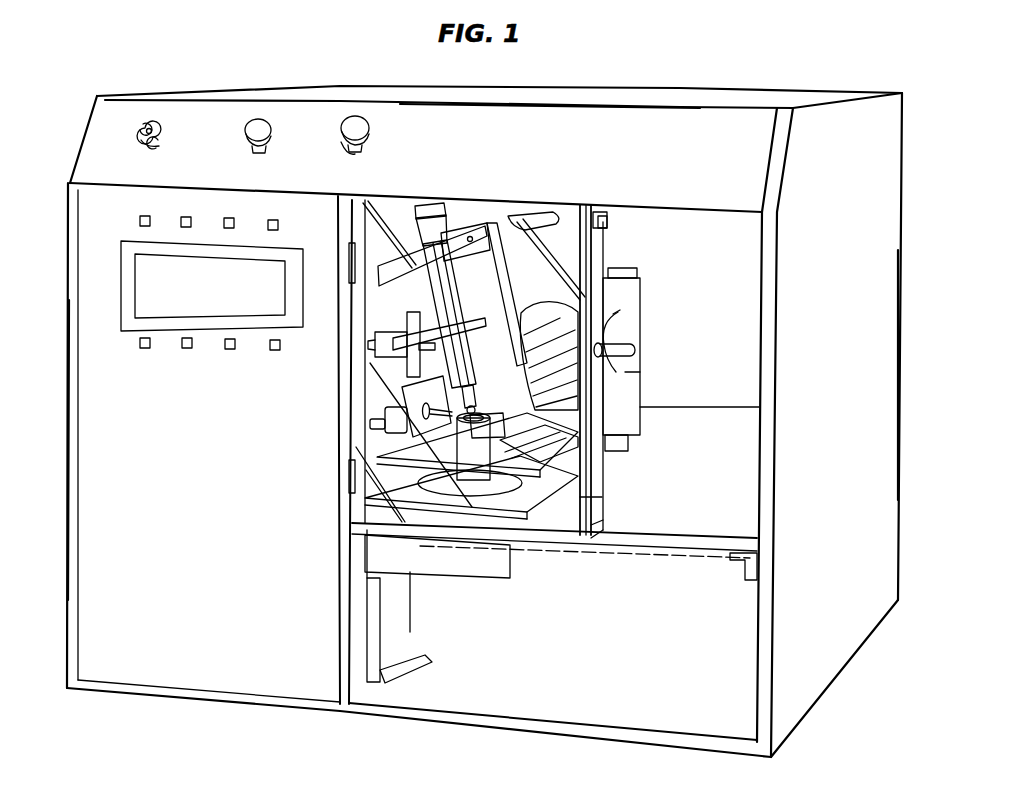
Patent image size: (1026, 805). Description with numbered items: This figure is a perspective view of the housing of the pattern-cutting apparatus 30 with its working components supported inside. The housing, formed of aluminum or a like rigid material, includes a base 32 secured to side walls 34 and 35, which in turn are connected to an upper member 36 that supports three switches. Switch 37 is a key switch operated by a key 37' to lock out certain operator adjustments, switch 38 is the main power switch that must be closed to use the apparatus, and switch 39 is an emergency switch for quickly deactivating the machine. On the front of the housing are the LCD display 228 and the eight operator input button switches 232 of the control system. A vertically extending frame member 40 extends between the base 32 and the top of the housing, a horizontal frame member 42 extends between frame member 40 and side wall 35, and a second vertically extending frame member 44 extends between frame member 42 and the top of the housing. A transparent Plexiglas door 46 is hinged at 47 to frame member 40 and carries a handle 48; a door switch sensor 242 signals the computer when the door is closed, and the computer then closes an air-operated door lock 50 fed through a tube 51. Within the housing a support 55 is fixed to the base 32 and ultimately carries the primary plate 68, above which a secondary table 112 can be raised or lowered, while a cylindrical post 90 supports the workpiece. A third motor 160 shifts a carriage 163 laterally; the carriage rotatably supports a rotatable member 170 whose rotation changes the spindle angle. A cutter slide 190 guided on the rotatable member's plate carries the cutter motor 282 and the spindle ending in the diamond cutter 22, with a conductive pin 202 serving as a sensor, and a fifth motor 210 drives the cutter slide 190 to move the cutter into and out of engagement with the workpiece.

The sample preparation machine 30 is at (841, 698).
The base 32 is at (537, 735).
The side wall 34 is at (68, 446).
The side wall 35 is at (842, 421).
The upper member 36 is at (726, 165).
The key 37' is at (123, 90).
The key switch 37 is at (223, 97).
The main power switch 38 is at (277, 115).
The emergency switch 39 is at (383, 117).
The LCD display 228 is at (140, 292).
The operator input button switches 232 is at (272, 218).
The vertically extending frame member 40 is at (340, 646).
The hinge 47 is at (356, 247).
The transparent Plexiglas door 46 is at (402, 216).
The cutter motor 282 is at (452, 213).
The cutter slide 190 is at (496, 216).
The third motor 160 is at (375, 357).
The conductive pin 202 is at (402, 390).
The fifth motor 210 is at (370, 424).
The diamond cutter tip 22 is at (478, 406).
The carriage 163 is at (578, 320).
The handle 48 is at (604, 238).
The door switch sensor 242 is at (600, 296).
The rotatable member 170 is at (578, 318).
The tube 51 is at (612, 336).
The door lock 50 is at (625, 372).
The secondary table 112 is at (547, 448).
The cylindrical post 90 is at (580, 459).
The primary plate 68 is at (528, 500).
The vertically extending frame member 44 is at (598, 497).
The horizontal frame member 42 is at (678, 553).
The support 55 is at (397, 636).